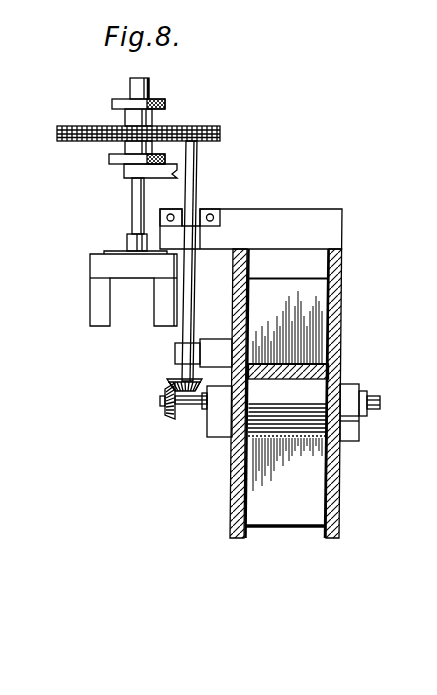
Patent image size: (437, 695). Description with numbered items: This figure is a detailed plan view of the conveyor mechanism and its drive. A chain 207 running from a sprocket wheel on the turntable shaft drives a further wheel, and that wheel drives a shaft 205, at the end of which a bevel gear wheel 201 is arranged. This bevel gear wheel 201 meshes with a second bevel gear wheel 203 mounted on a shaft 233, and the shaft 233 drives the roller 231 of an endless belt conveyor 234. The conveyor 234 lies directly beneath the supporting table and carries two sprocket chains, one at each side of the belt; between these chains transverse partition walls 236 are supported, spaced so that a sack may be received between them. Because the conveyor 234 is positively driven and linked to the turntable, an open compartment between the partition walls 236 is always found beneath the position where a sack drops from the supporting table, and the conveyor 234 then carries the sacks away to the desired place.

The bevel gear wheel 201 is at (178, 377).
The second bevel gear wheel 203 is at (165, 412).
The shaft 205 is at (197, 174).
The chain 207 is at (195, 125).
The roller 231 is at (318, 380).
The shaft 233 is at (190, 398).
The endless belt conveyor 234 is at (306, 346).
The transverse partition walls 236 is at (318, 292).